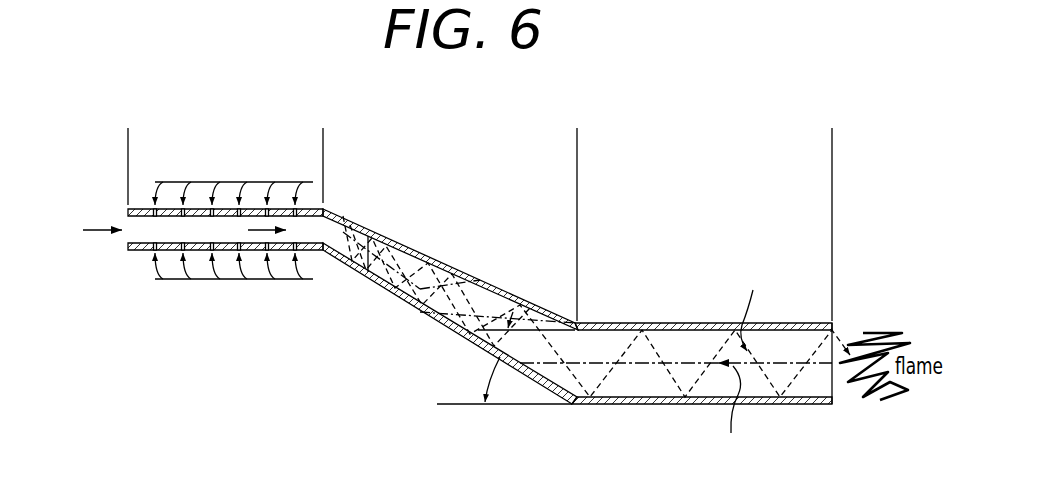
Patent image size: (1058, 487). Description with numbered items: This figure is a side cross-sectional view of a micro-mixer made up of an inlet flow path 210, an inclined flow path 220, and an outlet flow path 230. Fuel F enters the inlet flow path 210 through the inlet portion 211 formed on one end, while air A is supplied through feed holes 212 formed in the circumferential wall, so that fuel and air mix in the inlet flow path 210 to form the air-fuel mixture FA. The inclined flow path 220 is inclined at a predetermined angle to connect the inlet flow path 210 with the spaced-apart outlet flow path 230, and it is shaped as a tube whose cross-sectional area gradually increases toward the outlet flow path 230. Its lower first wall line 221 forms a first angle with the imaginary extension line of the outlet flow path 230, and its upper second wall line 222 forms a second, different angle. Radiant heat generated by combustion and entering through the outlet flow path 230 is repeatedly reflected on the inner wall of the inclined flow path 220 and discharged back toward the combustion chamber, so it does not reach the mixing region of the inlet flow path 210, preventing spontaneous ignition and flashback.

The inlet flow path 210 is at (128, 139).
The inlet portion 211 is at (133, 225).
The feed holes 212 is at (155, 252).
The inclined flow path 220 is at (323, 139).
The first wall line 221 is at (402, 300).
The second wall line 222 is at (428, 262).
The outlet flow path 230 is at (577, 139).